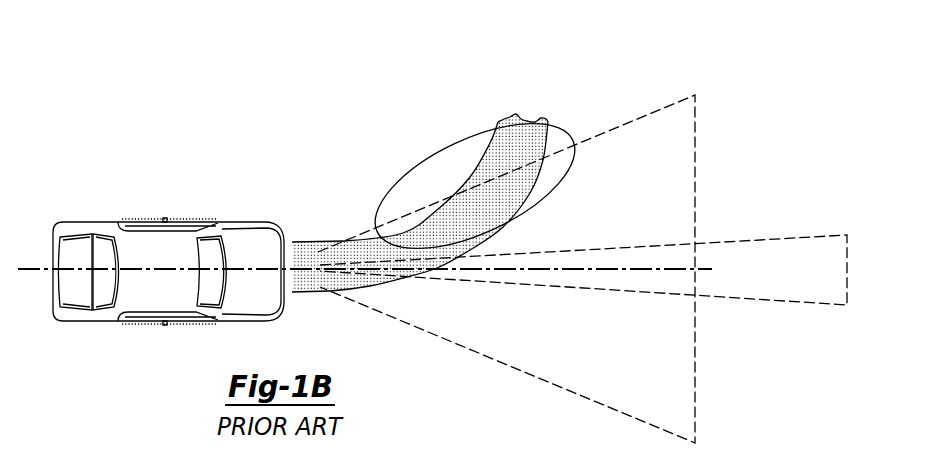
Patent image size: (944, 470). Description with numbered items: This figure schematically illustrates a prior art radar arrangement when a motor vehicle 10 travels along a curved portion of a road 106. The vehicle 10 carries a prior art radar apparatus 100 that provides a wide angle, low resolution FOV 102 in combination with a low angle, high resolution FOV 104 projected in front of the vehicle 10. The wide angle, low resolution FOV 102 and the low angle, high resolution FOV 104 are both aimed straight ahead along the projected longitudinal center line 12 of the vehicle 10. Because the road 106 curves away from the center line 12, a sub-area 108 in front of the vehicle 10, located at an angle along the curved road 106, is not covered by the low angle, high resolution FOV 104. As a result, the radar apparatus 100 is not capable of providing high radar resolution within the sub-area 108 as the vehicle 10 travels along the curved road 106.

The motor vehicle 10 is at (166, 208).
The projected longitudinal center line 12 is at (35, 267).
The radar apparatus 100 is at (289, 224).
The wide angle, low resolution FOV 102 is at (667, 127).
The low angle, high resolution FOV 104 is at (791, 237).
The road 106 is at (383, 279).
The sub-area 108 is at (420, 165).